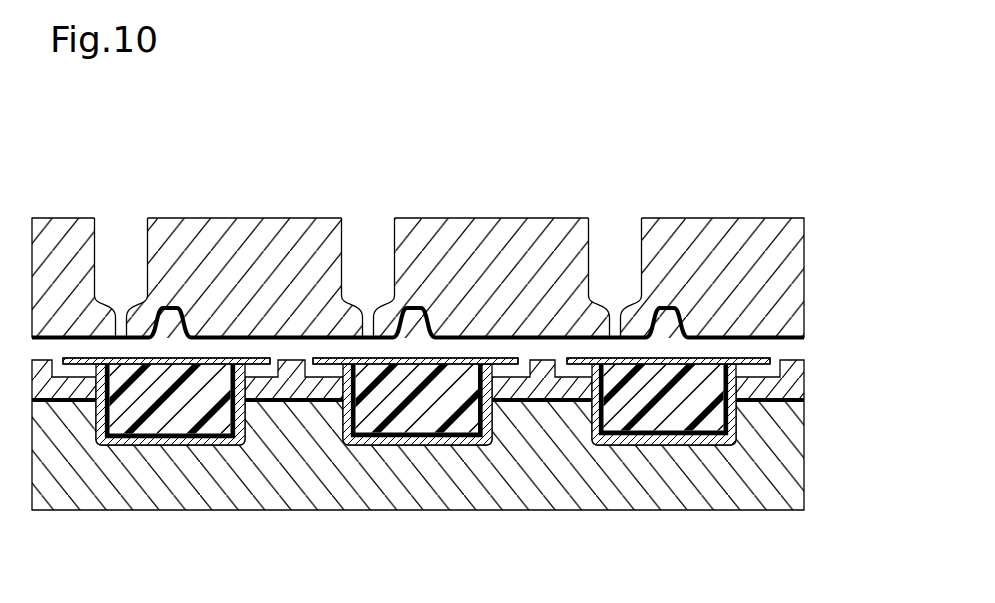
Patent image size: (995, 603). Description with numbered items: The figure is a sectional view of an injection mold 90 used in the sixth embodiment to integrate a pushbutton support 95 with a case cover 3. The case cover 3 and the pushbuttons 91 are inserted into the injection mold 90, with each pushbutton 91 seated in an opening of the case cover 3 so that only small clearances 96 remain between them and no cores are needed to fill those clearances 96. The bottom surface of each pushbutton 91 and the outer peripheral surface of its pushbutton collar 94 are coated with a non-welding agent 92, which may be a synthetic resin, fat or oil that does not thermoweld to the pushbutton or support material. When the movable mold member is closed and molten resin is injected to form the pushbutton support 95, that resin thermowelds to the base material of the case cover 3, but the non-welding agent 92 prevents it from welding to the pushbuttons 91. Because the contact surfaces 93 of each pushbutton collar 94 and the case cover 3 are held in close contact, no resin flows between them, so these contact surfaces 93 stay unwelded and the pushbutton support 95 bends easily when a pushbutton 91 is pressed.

The injection mold 90 is at (788, 208).
The pushbutton 91 is at (161, 462).
The non-welding agent 92 is at (207, 358).
The contact surfaces 93 is at (87, 403).
The pushbutton collar 94 is at (88, 364).
The pushbutton support 95 is at (417, 340).
The clearances 96 is at (92, 410).
The case cover 3 is at (268, 404).